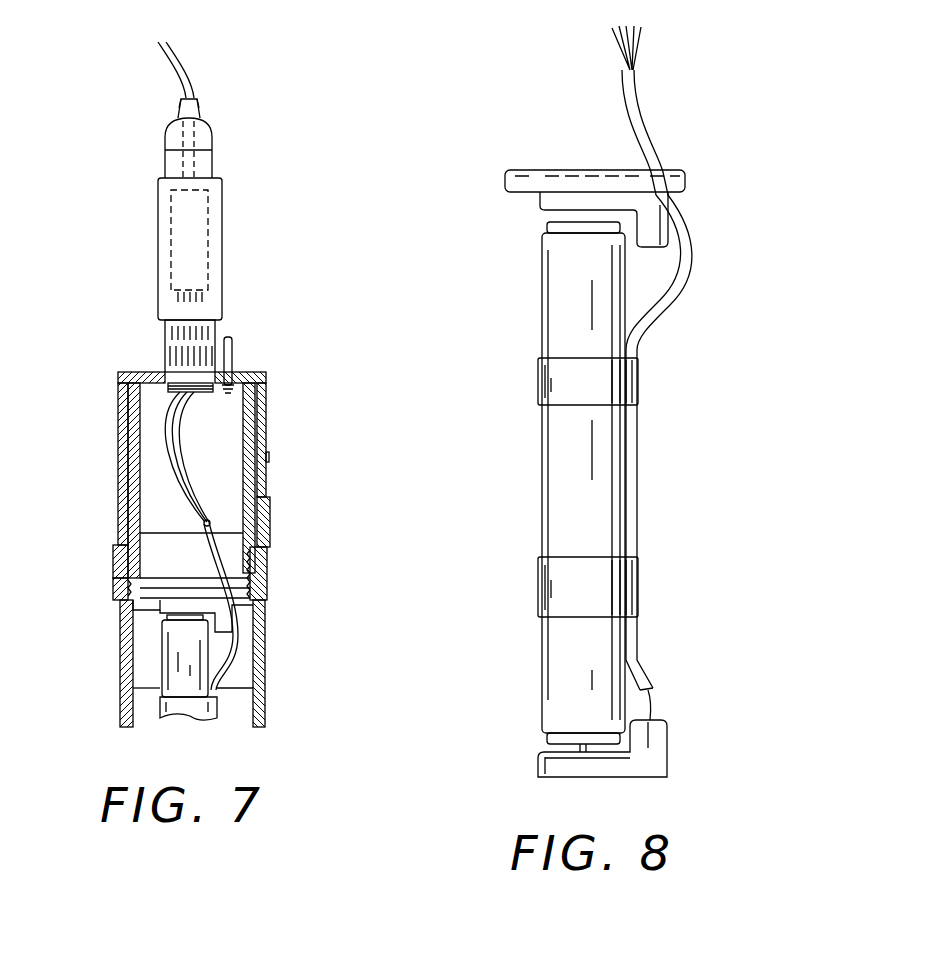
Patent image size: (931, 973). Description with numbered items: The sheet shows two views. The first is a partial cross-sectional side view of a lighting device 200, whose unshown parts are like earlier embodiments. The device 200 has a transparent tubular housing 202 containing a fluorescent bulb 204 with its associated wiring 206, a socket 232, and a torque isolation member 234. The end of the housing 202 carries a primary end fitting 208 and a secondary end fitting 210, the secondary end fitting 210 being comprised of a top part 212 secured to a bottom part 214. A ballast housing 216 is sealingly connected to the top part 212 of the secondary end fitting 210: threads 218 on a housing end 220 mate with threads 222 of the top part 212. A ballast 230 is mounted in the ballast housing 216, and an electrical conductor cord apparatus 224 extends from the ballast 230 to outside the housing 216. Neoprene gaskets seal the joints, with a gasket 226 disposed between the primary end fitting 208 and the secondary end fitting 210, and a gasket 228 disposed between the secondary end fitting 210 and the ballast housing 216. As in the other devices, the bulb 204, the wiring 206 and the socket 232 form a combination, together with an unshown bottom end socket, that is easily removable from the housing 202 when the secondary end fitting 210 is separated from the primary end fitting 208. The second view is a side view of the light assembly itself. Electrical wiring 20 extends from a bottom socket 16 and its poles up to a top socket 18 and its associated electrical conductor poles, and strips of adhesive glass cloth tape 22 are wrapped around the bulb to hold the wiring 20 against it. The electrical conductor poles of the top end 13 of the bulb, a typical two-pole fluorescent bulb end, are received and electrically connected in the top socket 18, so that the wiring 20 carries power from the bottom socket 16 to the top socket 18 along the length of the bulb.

In FIG. 7, the lighting device 200 is at (195, 530).
In FIG. 7, the transparent tubular housing 202 is at (263, 710).
In FIG. 7, the fluorescent bulb 204 is at (165, 648).
In FIG. 7, the wiring 206 is at (267, 648).
In FIG. 7, the primary end fitting 208 is at (262, 580).
In FIG. 7, the secondary end fitting 210 is at (263, 475).
In FIG. 7, the top part 212 is at (265, 413).
In FIG. 7, the bottom part 214 is at (268, 517).
In FIG. 7, the ballast housing 216 is at (222, 237).
In FIG. 7, the threads 218 is at (248, 370).
In FIG. 7, the housing end 220 is at (165, 353).
In FIG. 7, the threads 222 is at (120, 373).
In FIG. 7, the electrical conductor cord apparatus 224 is at (185, 68).
In FIG. 7, the gasket 226 is at (118, 543).
In FIG. 7, the gasket 228 is at (210, 347).
In FIG. 7, the ballast 230 is at (198, 280).
In FIG. 7, the socket 232 is at (163, 602).
In FIG. 7, the torque isolation member 234 is at (115, 573).
In FIG. 8, the top end 13 is at (553, 260).
In FIG. 8, the bottom socket 16 is at (650, 748).
In FIG. 8, the top socket 18 is at (537, 200).
In FIG. 8, the electrical wiring 20 is at (655, 303).
In FIG. 8, the adhesive glass cloth tape 22 is at (610, 387).